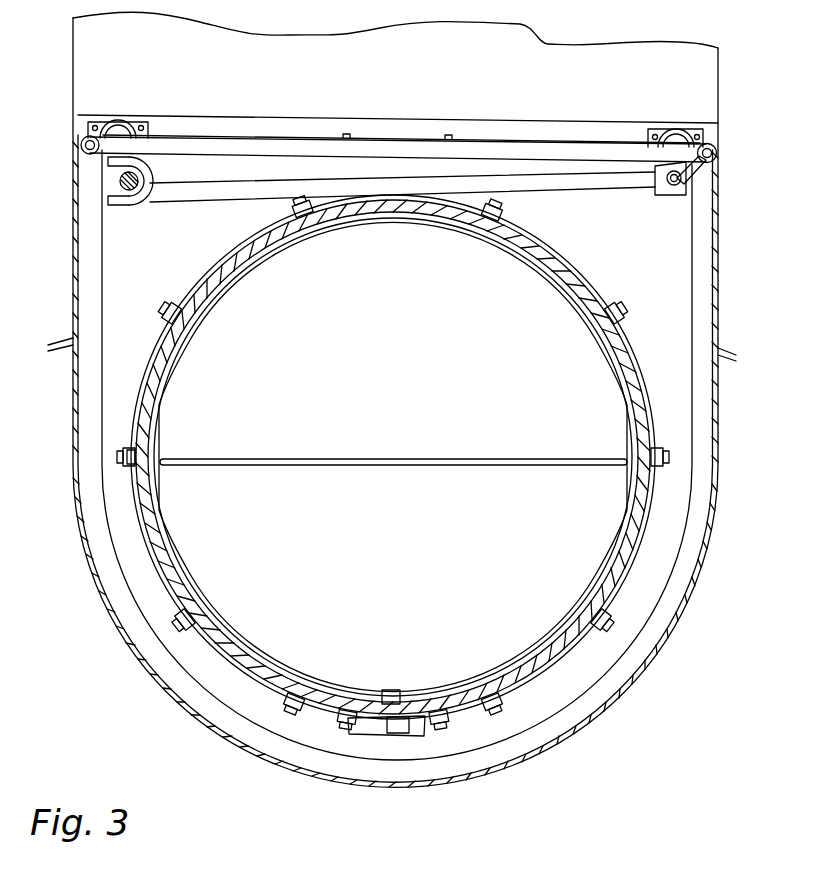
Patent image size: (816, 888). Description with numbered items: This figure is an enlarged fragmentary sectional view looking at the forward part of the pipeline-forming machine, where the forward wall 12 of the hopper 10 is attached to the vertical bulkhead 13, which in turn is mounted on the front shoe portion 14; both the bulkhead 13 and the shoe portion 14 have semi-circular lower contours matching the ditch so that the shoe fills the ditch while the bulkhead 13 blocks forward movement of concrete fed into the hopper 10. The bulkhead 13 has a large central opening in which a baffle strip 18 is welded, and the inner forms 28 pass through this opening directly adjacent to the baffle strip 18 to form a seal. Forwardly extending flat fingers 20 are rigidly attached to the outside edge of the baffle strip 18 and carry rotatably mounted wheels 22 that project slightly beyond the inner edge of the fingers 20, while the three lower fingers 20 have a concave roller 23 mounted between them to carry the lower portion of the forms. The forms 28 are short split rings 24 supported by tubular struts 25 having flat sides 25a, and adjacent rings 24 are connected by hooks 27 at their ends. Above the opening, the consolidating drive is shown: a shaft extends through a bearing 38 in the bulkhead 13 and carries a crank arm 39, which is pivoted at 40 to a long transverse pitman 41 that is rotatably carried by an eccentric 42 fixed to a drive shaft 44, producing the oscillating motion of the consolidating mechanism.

The hopper 10 is at (78, 62).
The forward wall 12 is at (453, 93).
The bulkhead 13 is at (658, 302).
The front shoe portion 14 is at (592, 718).
The baffle strip 18 is at (222, 270).
The fingers 20 is at (130, 472).
The wheels 22 is at (133, 452).
The concave roller 23 is at (406, 738).
The split rings 24 is at (172, 332).
The struts 25 is at (272, 252).
The flat sides 25a is at (165, 399).
The hooks 27 is at (386, 696).
The inner forms 28 is at (514, 230).
The bearing 38 is at (676, 130).
The crank arm 39 is at (692, 170).
The pivot 40 is at (670, 192).
The pitman 41 is at (590, 187).
The eccentric 42 is at (150, 206).
The drive shaft 44 is at (138, 180).